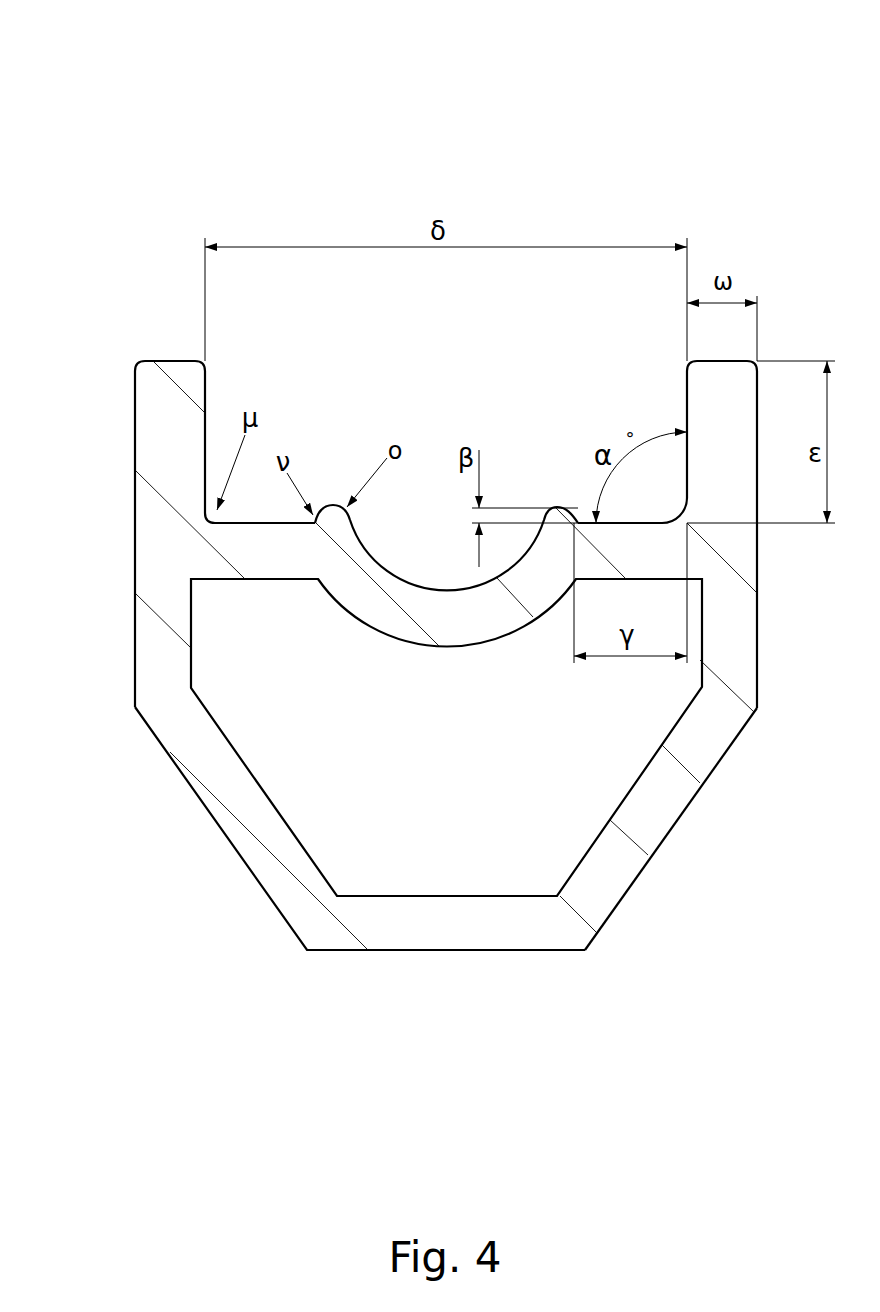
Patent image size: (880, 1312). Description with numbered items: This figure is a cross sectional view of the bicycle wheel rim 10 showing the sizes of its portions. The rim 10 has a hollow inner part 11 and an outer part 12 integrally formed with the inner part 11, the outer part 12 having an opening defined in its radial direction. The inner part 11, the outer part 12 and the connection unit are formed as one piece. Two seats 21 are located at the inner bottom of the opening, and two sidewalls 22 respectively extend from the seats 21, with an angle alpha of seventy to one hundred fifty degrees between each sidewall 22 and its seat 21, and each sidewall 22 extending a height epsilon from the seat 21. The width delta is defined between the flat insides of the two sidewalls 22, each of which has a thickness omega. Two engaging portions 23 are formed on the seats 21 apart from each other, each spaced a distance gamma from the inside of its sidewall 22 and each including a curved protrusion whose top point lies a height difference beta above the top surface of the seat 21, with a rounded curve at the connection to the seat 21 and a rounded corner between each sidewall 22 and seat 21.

The rim 10 is at (195, 850).
The inner part 11 is at (620, 868).
The outer part 12 is at (662, 172).
The seat 21 is at (282, 550).
The sidewall 22 is at (155, 432).
The engaging portion 23 is at (334, 507).